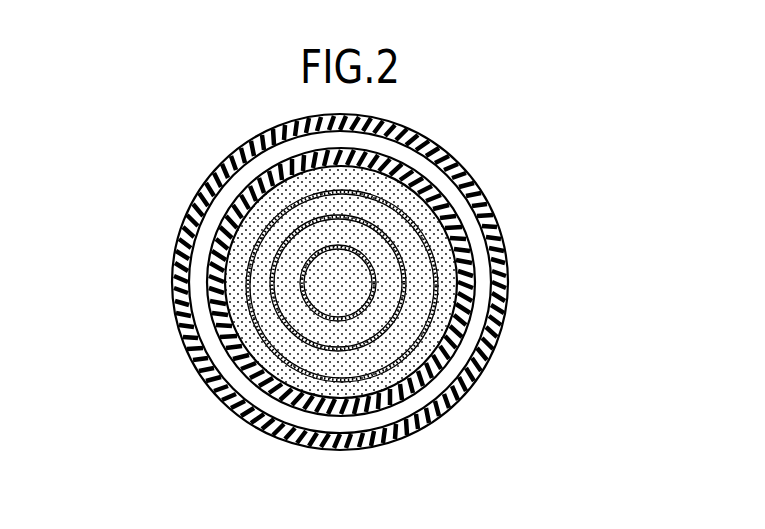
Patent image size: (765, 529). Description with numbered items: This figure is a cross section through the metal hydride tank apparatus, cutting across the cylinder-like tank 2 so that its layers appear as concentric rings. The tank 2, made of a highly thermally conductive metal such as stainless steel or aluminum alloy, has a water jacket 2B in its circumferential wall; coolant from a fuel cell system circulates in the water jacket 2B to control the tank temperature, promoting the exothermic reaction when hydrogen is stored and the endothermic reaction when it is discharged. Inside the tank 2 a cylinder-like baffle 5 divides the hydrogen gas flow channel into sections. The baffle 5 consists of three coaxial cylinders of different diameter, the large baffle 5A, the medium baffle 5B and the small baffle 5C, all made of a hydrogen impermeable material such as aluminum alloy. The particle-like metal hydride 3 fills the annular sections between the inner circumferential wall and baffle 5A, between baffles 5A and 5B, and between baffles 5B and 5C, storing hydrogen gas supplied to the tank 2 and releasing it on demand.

The tank 2 is at (438, 147).
The water jacket 2B is at (203, 374).
The metal hydride 3 is at (353, 237).
The baffle 5 is at (448, 263).
The large cylinder-like baffle 5A is at (405, 205).
The medium cylinder-like baffle 5B is at (385, 236).
The small cylinder-like baffle 5C is at (364, 257).